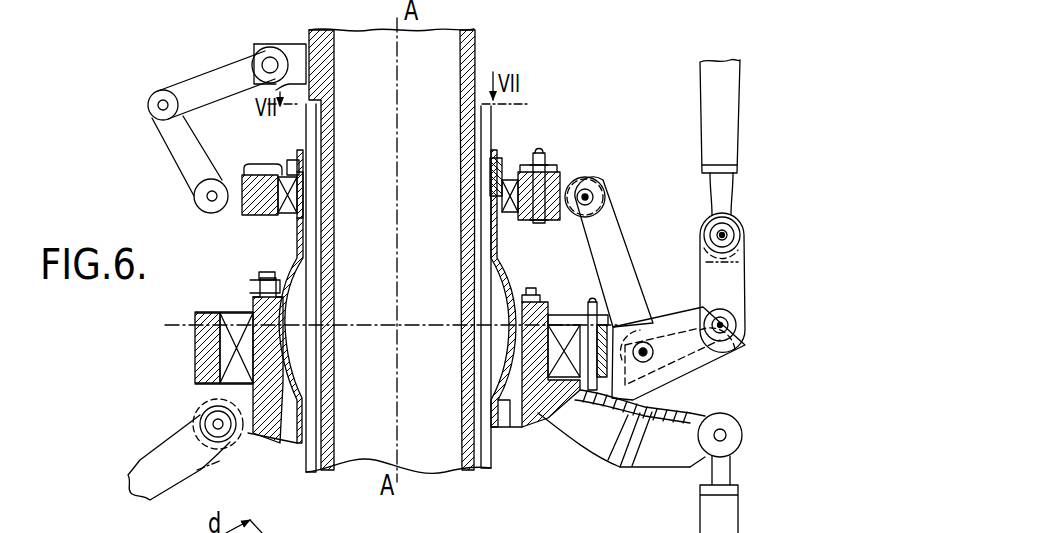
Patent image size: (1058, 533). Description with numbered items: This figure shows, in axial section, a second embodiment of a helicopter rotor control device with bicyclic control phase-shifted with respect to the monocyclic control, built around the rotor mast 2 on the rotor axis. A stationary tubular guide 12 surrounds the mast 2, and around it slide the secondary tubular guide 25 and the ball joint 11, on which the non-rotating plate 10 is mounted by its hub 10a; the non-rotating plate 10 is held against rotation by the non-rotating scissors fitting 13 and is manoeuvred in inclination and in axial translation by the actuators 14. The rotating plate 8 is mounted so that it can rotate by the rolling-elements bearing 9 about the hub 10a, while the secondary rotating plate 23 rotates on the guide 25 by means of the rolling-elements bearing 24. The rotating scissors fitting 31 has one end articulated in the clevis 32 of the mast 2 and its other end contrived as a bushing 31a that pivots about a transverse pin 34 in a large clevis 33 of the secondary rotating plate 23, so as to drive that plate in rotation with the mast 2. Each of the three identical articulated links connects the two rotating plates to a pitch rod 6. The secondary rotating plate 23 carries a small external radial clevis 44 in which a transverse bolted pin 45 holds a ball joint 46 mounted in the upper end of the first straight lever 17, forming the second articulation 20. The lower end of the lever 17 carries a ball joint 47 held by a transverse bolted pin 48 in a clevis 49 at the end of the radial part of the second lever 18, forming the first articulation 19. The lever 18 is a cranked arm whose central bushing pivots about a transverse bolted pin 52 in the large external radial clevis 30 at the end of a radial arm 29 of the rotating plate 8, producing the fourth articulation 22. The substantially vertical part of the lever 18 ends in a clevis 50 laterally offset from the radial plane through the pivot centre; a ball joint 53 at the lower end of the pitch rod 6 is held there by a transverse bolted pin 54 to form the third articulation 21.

The rotor mast 2 is at (478, 468).
The pitch rod 6 is at (715, 98).
The rotating plate 8 is at (192, 326).
The rolling-elements bearing 9 is at (222, 345).
The non-rotating plate 10 is at (604, 445).
The hub 10a is at (242, 340).
The ball joint 11 is at (512, 428).
The stationary tubular guide 12 is at (302, 460).
The non-rotating scissors fitting 13 is at (160, 480).
The actuators 14 is at (758, 522).
The first straight lever 17 is at (600, 252).
The second lever 18 is at (735, 285).
The first articulation 19 is at (750, 318).
The second articulation 20 is at (610, 204).
The third articulation 21 is at (736, 231).
The fourth articulation 22 is at (744, 348).
The secondary rotating plate 23 is at (261, 168).
The rolling-elements bearing 24 is at (516, 175).
The secondary tubular guide 25 is at (300, 236).
The radial arm 29 is at (642, 425).
The large external radial clevis 30 is at (311, 524).
The rotating scissors fitting 31 is at (200, 72).
The bushing 31a is at (200, 196).
The clevis 32 is at (293, 53).
The large clevis 33 is at (236, 208).
The transverse pin 34 is at (215, 210).
The small external radial clevis 44 is at (556, 180).
The transverse bolted pin 45 is at (588, 190).
The ball joint 46 is at (592, 196).
The ball joint 47 is at (650, 358).
The transverse bolted pin 48 is at (660, 354).
The clevis 49 is at (672, 318).
The clevis 50 is at (724, 258).
The transverse bolted pin 52 is at (736, 338).
The ball joint 53 is at (738, 224).
The transverse bolted pin 54 is at (738, 240).